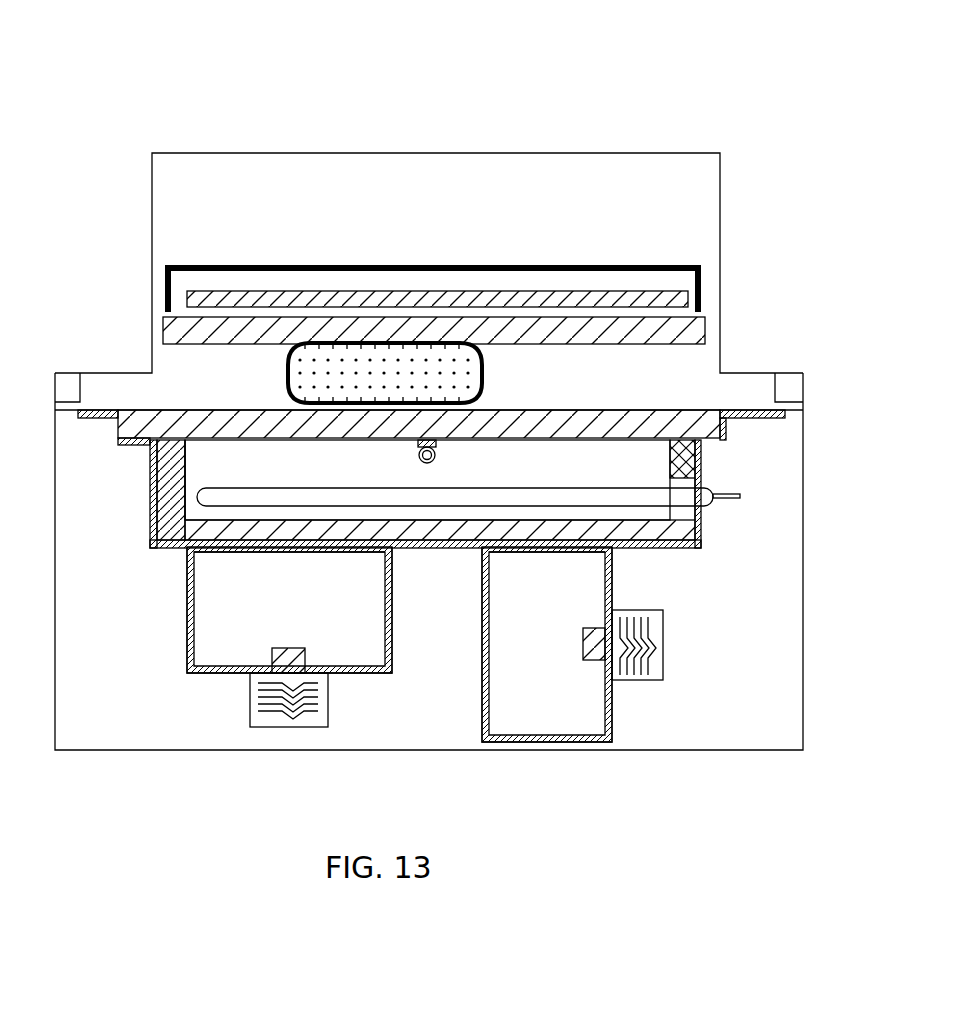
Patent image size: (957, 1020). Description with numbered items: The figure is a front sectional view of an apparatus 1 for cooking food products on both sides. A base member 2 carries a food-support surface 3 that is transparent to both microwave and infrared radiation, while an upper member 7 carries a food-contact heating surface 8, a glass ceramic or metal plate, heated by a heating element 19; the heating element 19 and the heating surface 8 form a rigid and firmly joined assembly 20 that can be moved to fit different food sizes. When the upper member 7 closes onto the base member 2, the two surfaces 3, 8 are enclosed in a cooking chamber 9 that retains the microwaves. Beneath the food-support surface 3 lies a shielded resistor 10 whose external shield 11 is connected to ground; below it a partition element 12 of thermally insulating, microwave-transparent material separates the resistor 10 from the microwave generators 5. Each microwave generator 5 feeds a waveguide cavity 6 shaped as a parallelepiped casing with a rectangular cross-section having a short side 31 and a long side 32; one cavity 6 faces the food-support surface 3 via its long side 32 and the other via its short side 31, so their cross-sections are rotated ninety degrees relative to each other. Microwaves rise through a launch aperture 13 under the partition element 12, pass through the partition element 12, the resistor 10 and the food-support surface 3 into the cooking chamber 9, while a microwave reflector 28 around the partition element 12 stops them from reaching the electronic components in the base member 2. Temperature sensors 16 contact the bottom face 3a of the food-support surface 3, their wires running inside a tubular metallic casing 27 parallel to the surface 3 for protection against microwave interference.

The apparatus for cooking food products on both sides 1 is at (540, 66).
The base member 2 is at (803, 552).
The food-support surface 3 is at (175, 428).
The bottom face of the food-support surface 3a is at (275, 438).
The microwave generator 5 is at (315, 705).
The waveguide cavity 6 is at (222, 618).
The upper member 7 is at (205, 152).
The food-contact heating surface 8 is at (690, 332).
The cooking chamber 9 is at (580, 405).
The shielded resistor 10 is at (275, 496).
The external shield 11 is at (560, 496).
The partition element 12 is at (165, 463).
The microwave launch aperture 13 is at (365, 557).
The temperature sensor 16 is at (436, 452).
The heating element 19 is at (478, 300).
The rigid and firmly joined assembly 20 is at (730, 300).
The metallic casing 27 is at (418, 456).
The microwave reflector 28 is at (150, 532).
The short side 31 is at (187, 597).
The long side 32 is at (215, 675).